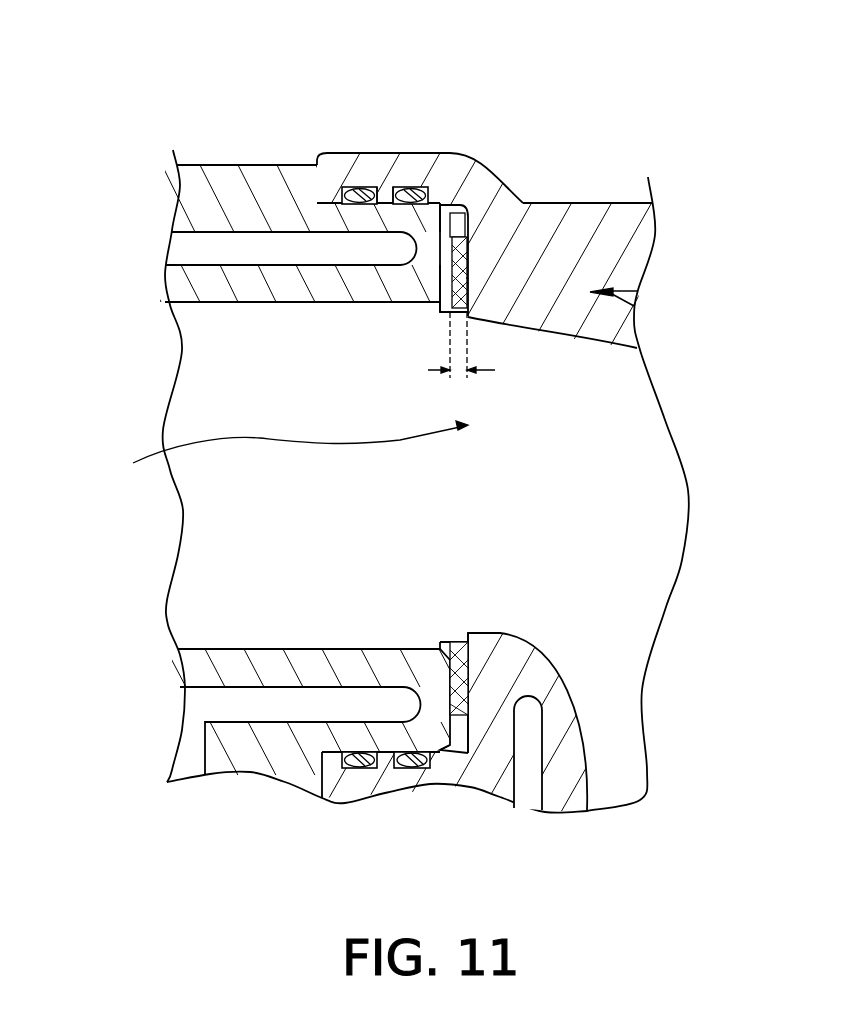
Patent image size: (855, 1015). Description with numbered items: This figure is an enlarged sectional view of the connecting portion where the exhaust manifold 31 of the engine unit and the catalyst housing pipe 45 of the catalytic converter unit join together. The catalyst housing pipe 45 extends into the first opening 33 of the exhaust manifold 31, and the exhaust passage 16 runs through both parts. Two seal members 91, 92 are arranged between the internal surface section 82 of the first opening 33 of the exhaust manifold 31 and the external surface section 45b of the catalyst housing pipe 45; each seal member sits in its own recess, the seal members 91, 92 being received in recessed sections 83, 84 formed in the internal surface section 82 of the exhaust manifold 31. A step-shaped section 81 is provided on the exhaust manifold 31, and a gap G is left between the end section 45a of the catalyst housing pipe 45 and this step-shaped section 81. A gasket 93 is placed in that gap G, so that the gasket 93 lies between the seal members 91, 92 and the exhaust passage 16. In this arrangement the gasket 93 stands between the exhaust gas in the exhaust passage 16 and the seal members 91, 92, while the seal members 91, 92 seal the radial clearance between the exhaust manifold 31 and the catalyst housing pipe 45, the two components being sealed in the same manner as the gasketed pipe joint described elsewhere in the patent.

The catalyst housing pipe 45 is at (193, 183).
The end section 45a is at (468, 280).
The external surface section 45b is at (384, 200).
The exhaust manifold 31 is at (625, 213).
The first opening 33 is at (277, 452).
The exhaust passage 16 is at (400, 556).
The step-shaped section 81 is at (445, 305).
The internal surface section 82 is at (387, 205).
The recessed section 83 is at (420, 186).
The recessed section 84 is at (362, 196).
The seal member 91 is at (406, 197).
The seal member 92 is at (358, 190).
The gasket 93 is at (493, 200).
The gap G is at (463, 375).